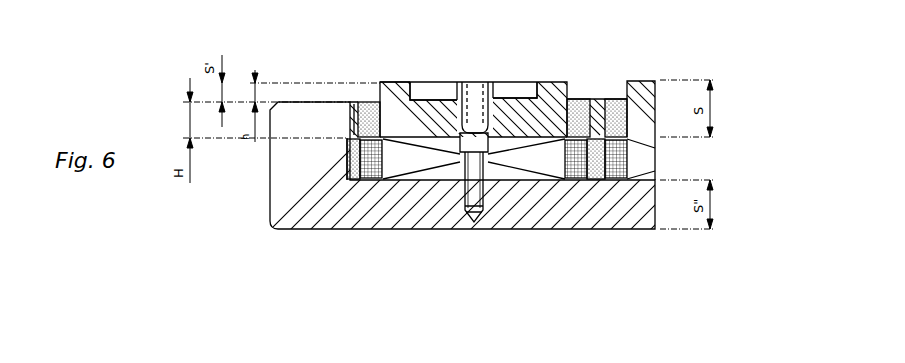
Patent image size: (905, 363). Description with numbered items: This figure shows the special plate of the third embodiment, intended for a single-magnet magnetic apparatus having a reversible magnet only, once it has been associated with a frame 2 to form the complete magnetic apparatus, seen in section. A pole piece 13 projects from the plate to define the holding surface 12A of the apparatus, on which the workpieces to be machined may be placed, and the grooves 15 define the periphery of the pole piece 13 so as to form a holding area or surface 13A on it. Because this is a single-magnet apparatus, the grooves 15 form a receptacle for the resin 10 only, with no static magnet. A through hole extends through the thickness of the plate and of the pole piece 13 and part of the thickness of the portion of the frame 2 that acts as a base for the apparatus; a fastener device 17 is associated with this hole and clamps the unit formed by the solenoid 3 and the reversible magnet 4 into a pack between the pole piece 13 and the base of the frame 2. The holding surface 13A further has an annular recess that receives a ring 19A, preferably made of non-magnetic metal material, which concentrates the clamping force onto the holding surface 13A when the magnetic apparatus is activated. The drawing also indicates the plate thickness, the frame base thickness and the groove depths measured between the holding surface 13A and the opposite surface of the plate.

The frame 2 is at (312, 205).
The solenoid 3 is at (374, 174).
The reversible magnet 4 is at (417, 163).
The resin 10 is at (616, 98).
The holding surface 12A is at (663, 71).
The pole piece 13 is at (513, 105).
The holding area or surface 13A is at (398, 78).
The grooves 15 is at (592, 90).
The fastener device 17 is at (478, 147).
The ring 19A is at (432, 87).